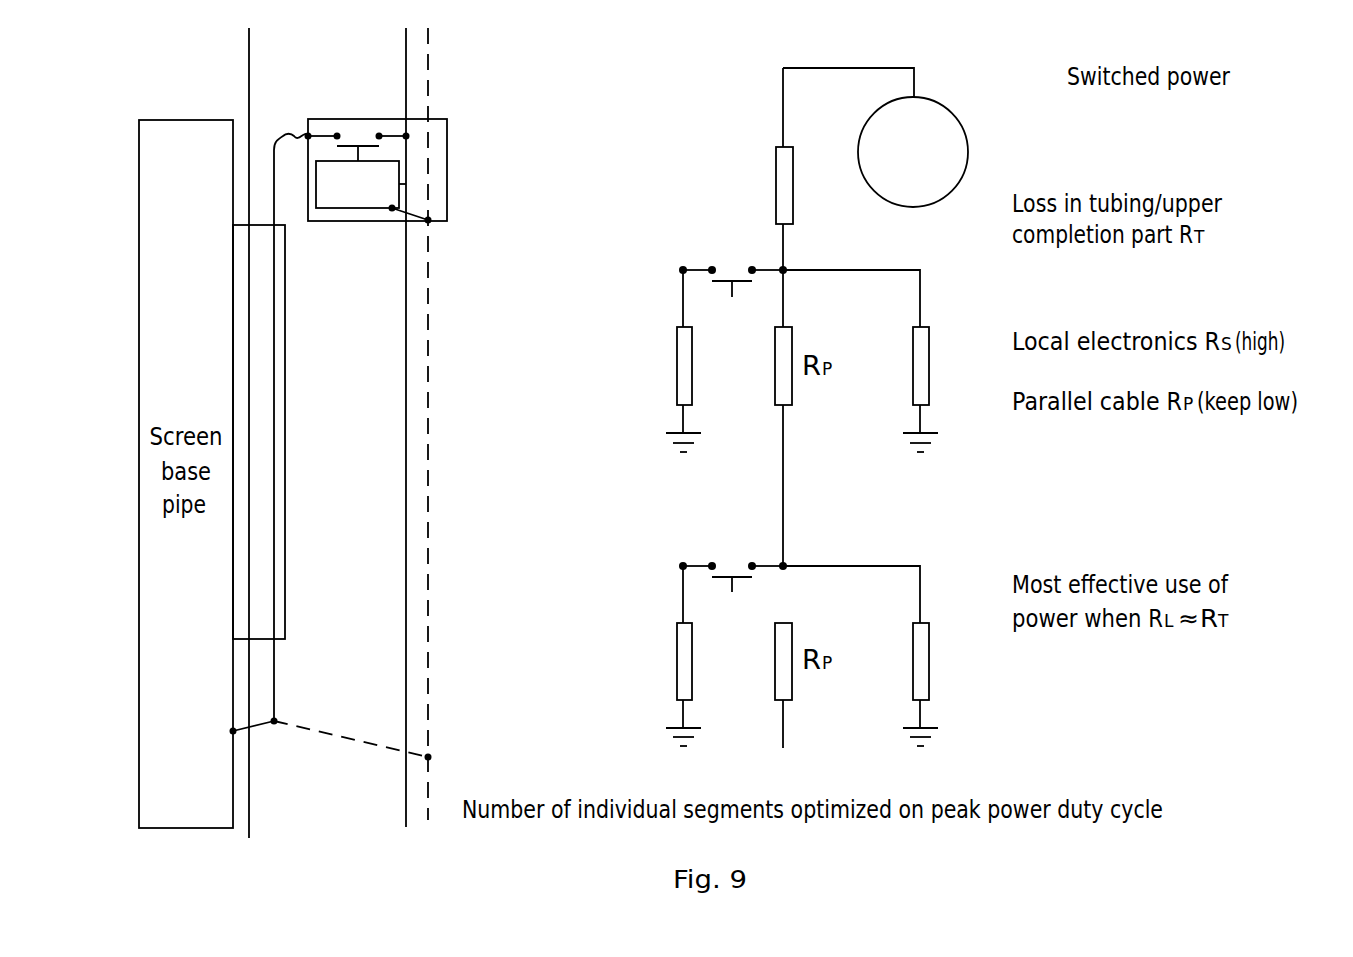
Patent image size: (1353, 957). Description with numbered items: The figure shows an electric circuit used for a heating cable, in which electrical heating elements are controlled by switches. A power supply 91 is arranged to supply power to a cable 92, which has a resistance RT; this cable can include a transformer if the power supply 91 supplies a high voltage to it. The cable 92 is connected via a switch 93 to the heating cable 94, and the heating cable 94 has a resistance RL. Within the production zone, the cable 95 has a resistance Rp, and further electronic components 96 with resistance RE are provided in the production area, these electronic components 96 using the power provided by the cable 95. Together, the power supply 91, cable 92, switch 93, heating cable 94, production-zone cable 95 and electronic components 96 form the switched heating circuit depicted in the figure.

The power supply 91 is at (953, 112).
The cable 92 is at (775, 178).
The switch 93 is at (360, 118).
The heating cable 94 is at (666, 655).
The cable 95 is at (407, 577).
The electronic components 96 is at (938, 415).